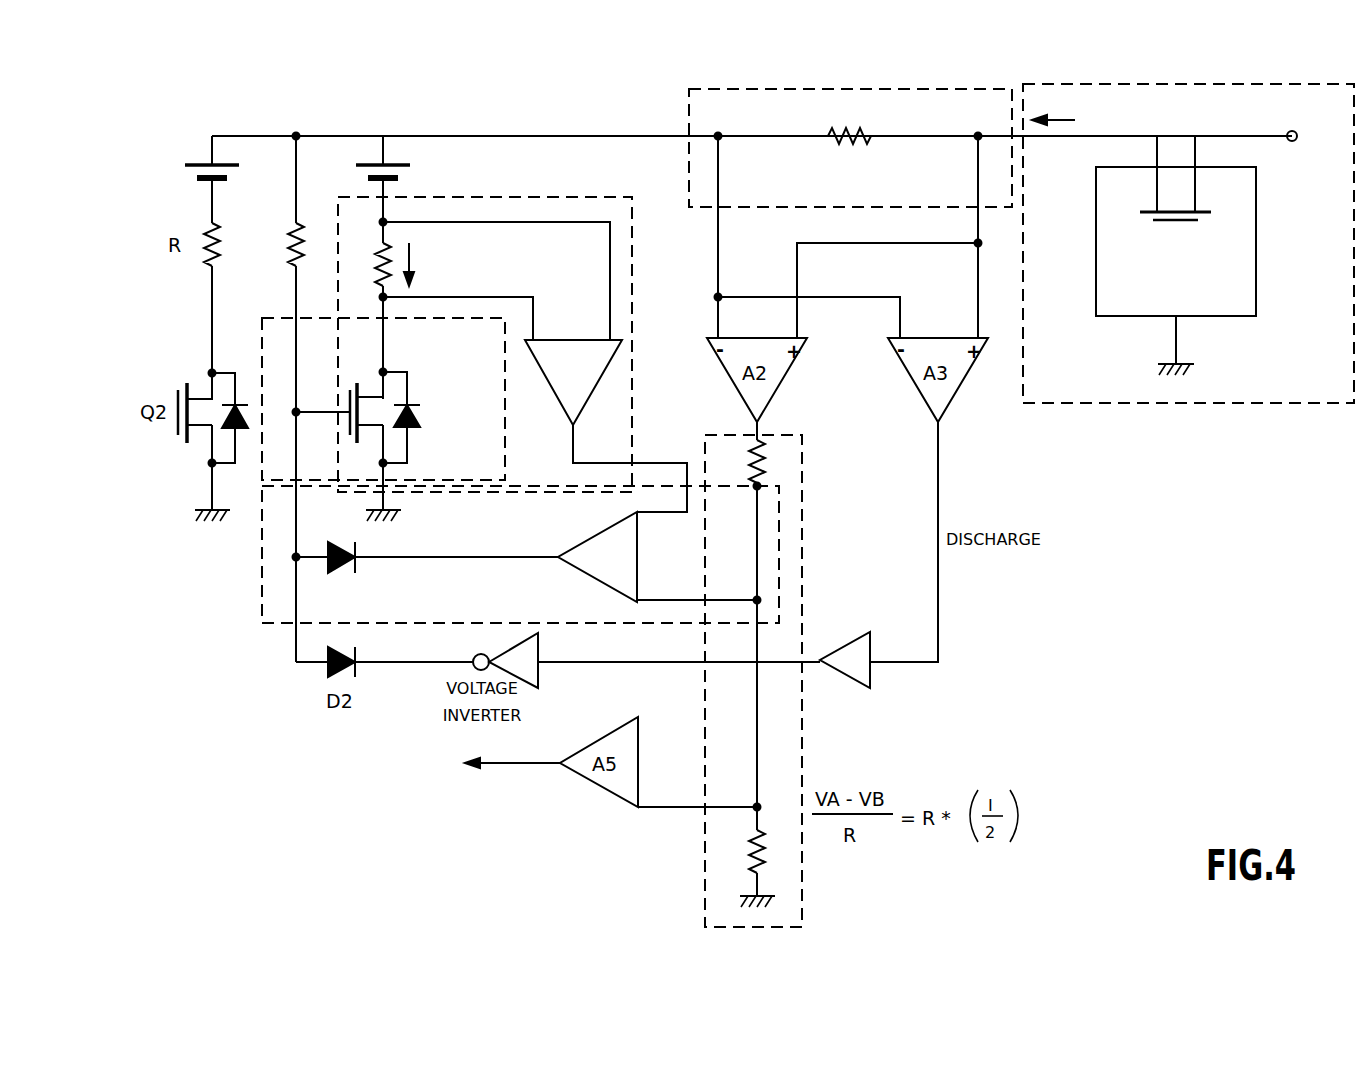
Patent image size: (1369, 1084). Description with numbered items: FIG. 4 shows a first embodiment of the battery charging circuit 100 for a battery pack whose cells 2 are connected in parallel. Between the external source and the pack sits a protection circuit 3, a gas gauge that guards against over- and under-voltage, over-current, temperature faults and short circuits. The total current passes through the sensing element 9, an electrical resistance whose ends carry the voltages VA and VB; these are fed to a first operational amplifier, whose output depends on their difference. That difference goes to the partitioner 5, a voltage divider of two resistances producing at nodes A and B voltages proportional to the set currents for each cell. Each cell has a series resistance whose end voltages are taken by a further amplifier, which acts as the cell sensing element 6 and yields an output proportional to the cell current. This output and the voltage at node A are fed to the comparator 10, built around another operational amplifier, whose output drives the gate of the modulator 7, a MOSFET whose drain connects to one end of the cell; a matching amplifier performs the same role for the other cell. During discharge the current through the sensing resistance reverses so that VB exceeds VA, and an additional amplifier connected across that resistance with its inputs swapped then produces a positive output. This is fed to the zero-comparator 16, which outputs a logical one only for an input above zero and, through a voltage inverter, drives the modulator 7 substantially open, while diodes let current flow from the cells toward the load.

The battery charging circuit 100 is at (139, 127).
The cell 2 is at (182, 193).
The protection circuit 3 is at (1238, 404).
The partitioner 5 is at (803, 866).
The cell sensing element 6 is at (546, 197).
The modulator 7 is at (262, 352).
The sensing element 9 is at (688, 178).
The comparator 10 is at (262, 567).
The zero-comparator 16 is at (853, 668).